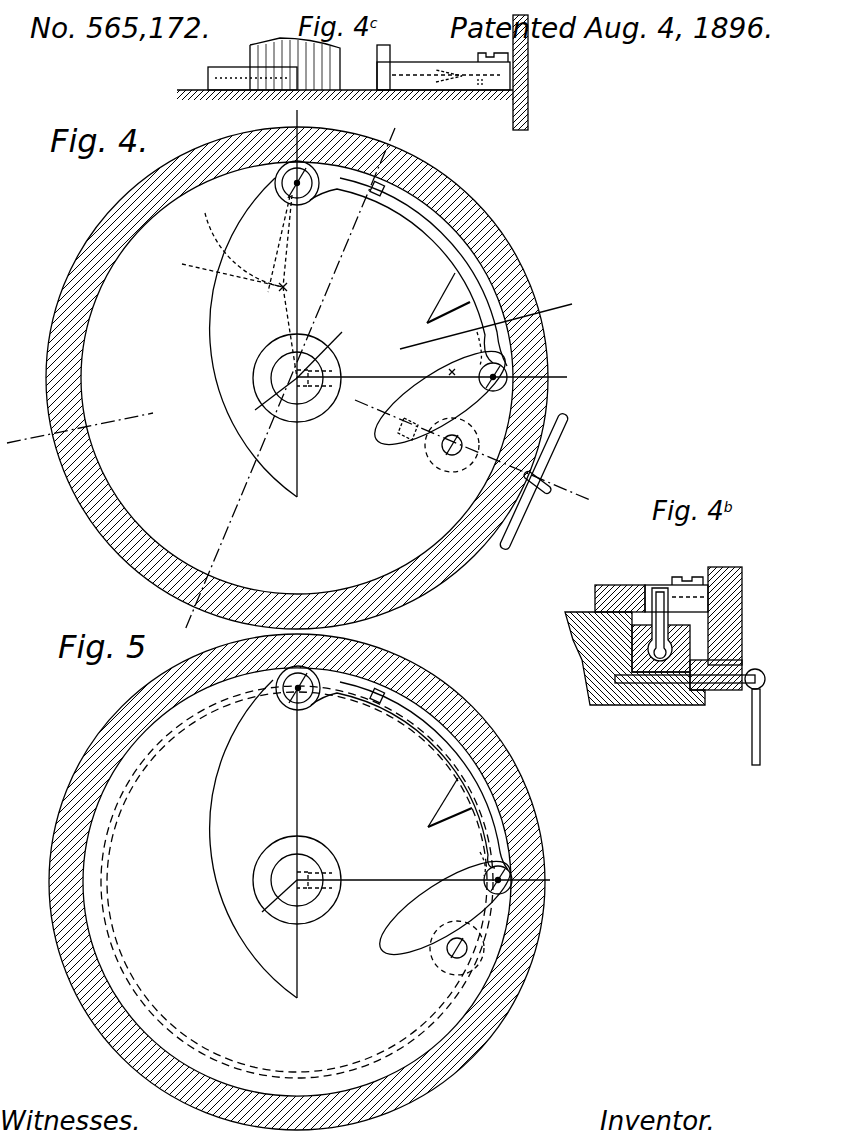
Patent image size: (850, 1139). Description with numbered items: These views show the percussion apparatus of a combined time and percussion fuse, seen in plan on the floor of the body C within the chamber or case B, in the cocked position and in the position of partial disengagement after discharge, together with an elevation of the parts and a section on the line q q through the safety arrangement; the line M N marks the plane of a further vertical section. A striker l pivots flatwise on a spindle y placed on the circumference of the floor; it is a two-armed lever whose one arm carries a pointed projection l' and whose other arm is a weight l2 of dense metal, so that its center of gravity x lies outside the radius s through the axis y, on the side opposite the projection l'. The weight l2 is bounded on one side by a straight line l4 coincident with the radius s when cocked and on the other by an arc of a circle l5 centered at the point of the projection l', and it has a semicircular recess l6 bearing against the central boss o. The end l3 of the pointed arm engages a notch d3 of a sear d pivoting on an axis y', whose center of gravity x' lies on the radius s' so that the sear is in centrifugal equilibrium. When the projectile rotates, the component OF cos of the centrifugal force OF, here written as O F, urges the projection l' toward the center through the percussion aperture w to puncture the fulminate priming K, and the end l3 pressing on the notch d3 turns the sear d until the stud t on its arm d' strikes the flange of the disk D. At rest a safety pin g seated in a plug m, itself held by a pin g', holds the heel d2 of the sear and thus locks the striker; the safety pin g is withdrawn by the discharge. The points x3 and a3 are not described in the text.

In FIG. 4c, the chamber or case B is at (528, 78).
In FIG. 4, the chamber or case B is at (74, 472).
In FIG. 4b, the chamber or case B is at (744, 592).
In FIG. 5, the chamber or case B is at (58, 948).
In FIG. 4c, the body C is at (345, 103).
In FIG. 4, the body C is at (176, 452).
In FIG. 4b, the body C is at (635, 658).
In FIG. 5, the body C is at (180, 882).
In FIG. 4, the section line M N is at (80, 430).
In FIG. 4, the centrifugal force O F is at (263, 150).
In FIG. 4, the fulminate priming K is at (295, 384).
In FIG. 5, the fulminate priming K is at (293, 882).
In FIG. 4c, the central projection or boss o is at (292, 50).
In FIG. 4, the central projection or boss o is at (290, 386).
In FIG. 5, the central projection or boss o is at (284, 881).
In FIG. 4c, the striker l is at (265, 70).
In FIG. 4, the striker l is at (401, 276).
In FIG. 5, the striker l is at (403, 780).
In FIG. 4c, the pointed projection l' is at (449, 95).
In FIG. 4, the pointed projection l' is at (445, 298).
In FIG. 5, the pointed projection l' is at (442, 802).
In FIG. 4c, the weight or heel of the striker l2 is at (262, 70).
In FIG. 4, the weight or heel of the striker l2 is at (253, 337).
In FIG. 5, the weight or heel of the striker l2 is at (253, 839).
In FIG. 4, the end of the striker arm l3 is at (474, 348).
In FIG. 5, the end of the striker arm l3 is at (482, 848).
In FIG. 4, the straight line of the arm l4 is at (299, 250).
In FIG. 5, the straight line of the arm l4 is at (299, 790).
In FIG. 4, the arc of a circle l5 is at (211, 344).
In FIG. 5, the arc of a circle l5 is at (213, 810).
In FIG. 4, the semicircular recess l6 is at (256, 380).
In FIG. 5, the semicircular recess l6 is at (258, 868).
In FIG. 4, the spindle y is at (310, 183).
In FIG. 5, the spindle y is at (293, 700).
In FIG. 4, the axis of the sear y' is at (531, 380).
In FIG. 5, the axis of the sear y' is at (533, 880).
In FIG. 4, the center of gravity of the striker x is at (279, 286).
In FIG. 4, the center of gravity of the sear x' is at (449, 382).
In FIG. 5, the cord point x3 is at (180, 718).
In FIG. 4, the centrifugal force OF is at (206, 250).
In FIG. 4, the radius of the fuse through axis y s is at (319, 329).
In FIG. 4, the radius of the fuse through axis y' s' is at (402, 359).
In FIG. 4c, the stud or catch t is at (390, 55).
In FIG. 4, the stud or catch t is at (377, 204).
In FIG. 5, the stud or catch t is at (370, 700).
In FIG. 4c, the sear d is at (443, 62).
In FIG. 4, the sear d is at (545, 341).
In FIG. 4b, the sear d is at (620, 581).
In FIG. 4, the arm of the sear d' is at (439, 272).
In FIG. 5, the arm of the sear d' is at (424, 776).
In FIG. 4, the heel of the sear d2 is at (440, 398).
In FIG. 5, the heel of the sear d2 is at (445, 908).
In FIG. 4c, the notch of the sear d3 is at (480, 92).
In FIG. 4, the section line M N M is at (486, 316).
In FIG. 4, the pivot a3 is at (450, 366).
In FIG. 5, the pivot a3 is at (468, 860).
In FIG. 4, the percussion-aperture w is at (432, 366).
In FIG. 5, the percussion-aperture w is at (423, 879).
In FIG. 4, the safety-pin g is at (452, 453).
In FIG. 4b, the safety-pin g is at (661, 611).
In FIG. 5, the safety-pin g is at (454, 951).
In FIG. 4, the pin g' is at (554, 475).
In FIG. 4b, the pin g' is at (767, 706).
In FIG. 4, the plug m is at (420, 455).
In FIG. 4b, the plug m is at (645, 686).
In FIG. 4, the section line q q is at (472, 474).
In FIG. 5, the disk or plate D is at (120, 806).